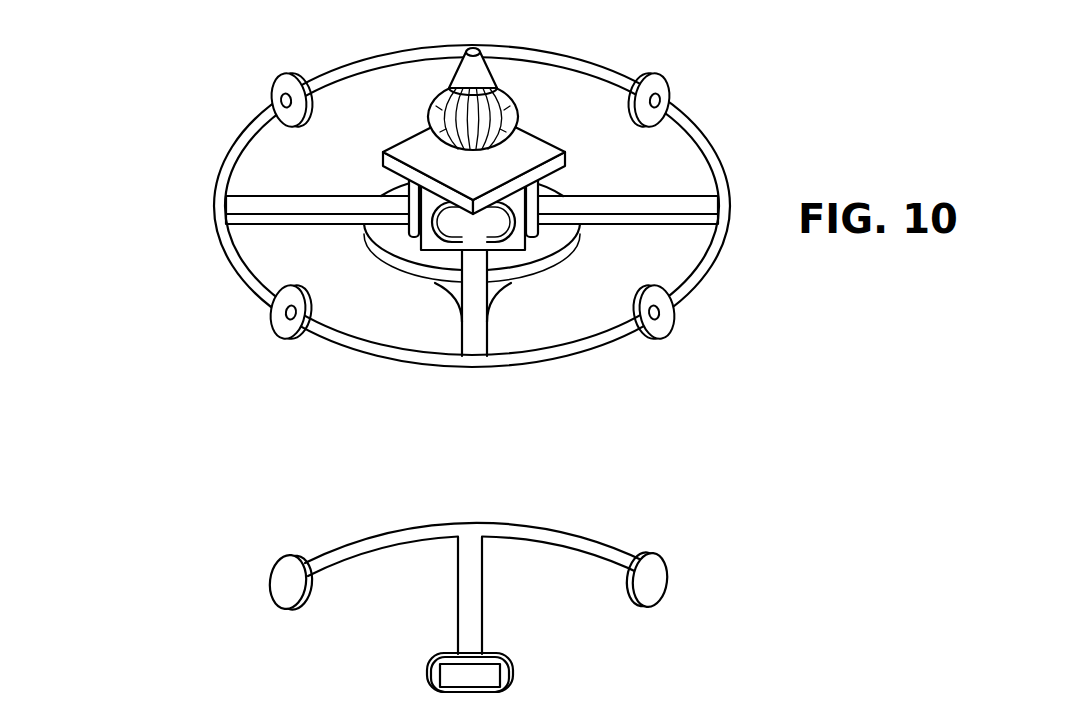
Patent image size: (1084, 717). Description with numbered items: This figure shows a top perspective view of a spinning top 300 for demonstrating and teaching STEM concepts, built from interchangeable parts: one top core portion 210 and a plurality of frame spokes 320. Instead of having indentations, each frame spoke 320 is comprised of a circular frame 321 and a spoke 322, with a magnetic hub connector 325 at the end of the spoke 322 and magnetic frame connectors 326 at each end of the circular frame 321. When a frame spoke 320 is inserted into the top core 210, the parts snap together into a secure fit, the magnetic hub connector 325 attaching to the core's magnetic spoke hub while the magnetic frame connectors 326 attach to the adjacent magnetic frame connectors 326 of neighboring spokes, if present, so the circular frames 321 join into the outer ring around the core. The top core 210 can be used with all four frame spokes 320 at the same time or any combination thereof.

The spinning top 300 is at (188, 96).
The frame spoke 320 is at (345, 63).
The circular frame 321 is at (527, 549).
The spoke 322 is at (455, 605).
The magnetic hub connector 325 is at (423, 677).
The magnetic frame connectors 326 is at (266, 574).
The top core portion 210 is at (366, 149).